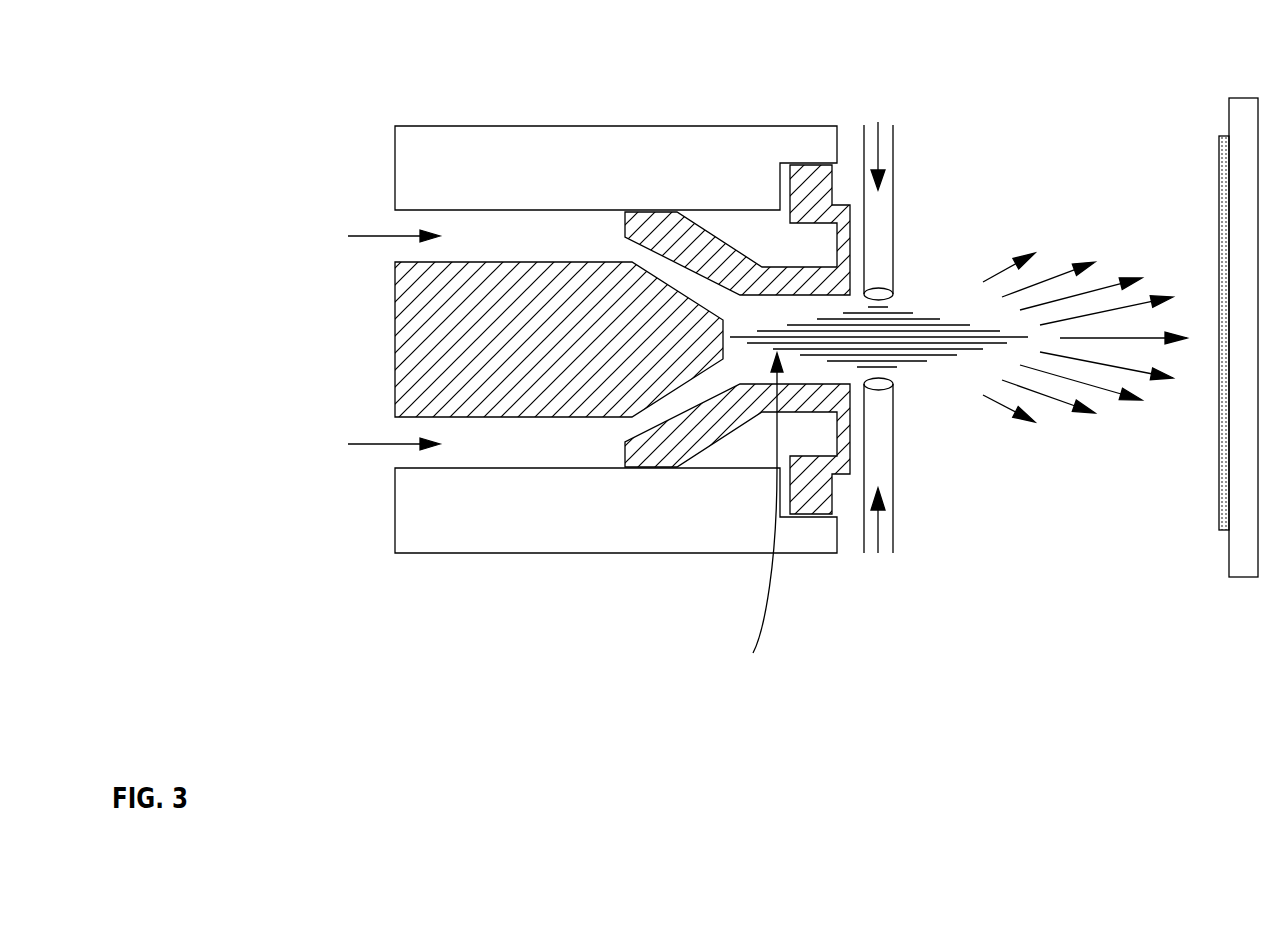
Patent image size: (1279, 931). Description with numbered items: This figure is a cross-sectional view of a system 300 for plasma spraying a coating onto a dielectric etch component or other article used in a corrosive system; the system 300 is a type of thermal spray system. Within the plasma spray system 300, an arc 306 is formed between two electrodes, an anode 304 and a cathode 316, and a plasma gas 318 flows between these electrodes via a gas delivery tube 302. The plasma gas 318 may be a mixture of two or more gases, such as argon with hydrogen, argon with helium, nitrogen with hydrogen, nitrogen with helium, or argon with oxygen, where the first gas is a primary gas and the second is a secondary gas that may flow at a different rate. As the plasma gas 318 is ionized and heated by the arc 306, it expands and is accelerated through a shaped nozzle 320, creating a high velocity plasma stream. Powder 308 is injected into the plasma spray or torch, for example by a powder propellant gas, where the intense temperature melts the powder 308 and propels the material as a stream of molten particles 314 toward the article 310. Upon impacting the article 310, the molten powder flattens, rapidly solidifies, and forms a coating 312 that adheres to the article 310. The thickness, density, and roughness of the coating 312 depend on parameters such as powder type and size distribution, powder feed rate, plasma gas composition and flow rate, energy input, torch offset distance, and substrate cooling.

The system 300 is at (391, 91).
The gas delivery tube 302 is at (562, 126).
The anode 304 is at (692, 223).
The arc 306 is at (918, 323).
The powder 308 is at (893, 177).
The article 310 is at (1229, 98).
The coating 312 is at (1215, 163).
The molten particles 314 is at (1058, 266).
The cathode 316 is at (393, 352).
The plasma gas 318 is at (372, 212).
The shaped nozzle 320 is at (737, 509).